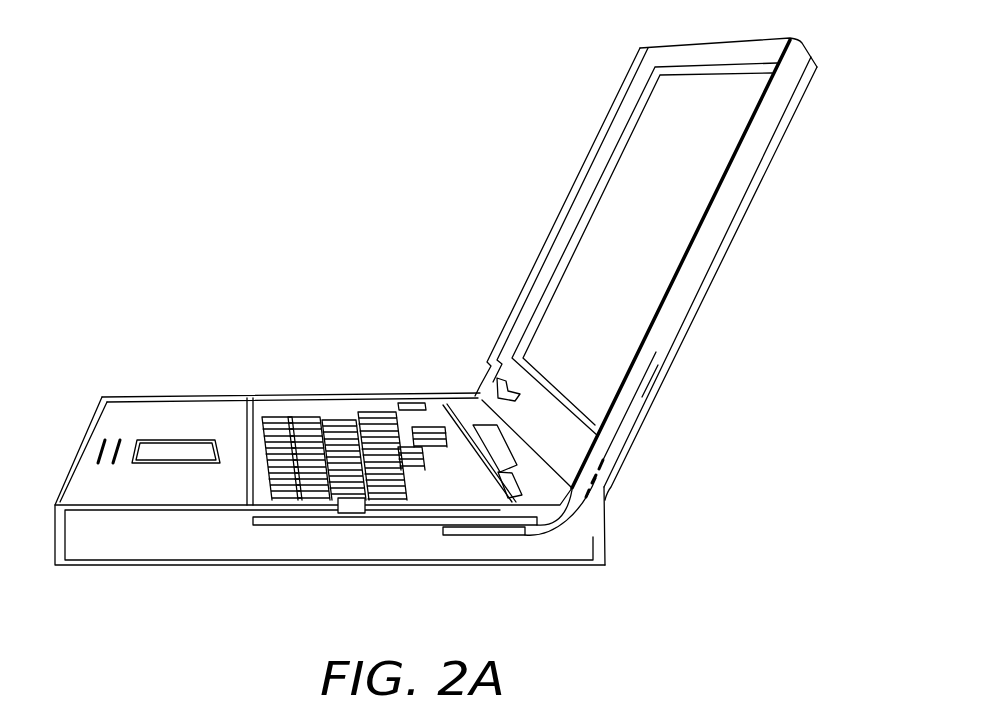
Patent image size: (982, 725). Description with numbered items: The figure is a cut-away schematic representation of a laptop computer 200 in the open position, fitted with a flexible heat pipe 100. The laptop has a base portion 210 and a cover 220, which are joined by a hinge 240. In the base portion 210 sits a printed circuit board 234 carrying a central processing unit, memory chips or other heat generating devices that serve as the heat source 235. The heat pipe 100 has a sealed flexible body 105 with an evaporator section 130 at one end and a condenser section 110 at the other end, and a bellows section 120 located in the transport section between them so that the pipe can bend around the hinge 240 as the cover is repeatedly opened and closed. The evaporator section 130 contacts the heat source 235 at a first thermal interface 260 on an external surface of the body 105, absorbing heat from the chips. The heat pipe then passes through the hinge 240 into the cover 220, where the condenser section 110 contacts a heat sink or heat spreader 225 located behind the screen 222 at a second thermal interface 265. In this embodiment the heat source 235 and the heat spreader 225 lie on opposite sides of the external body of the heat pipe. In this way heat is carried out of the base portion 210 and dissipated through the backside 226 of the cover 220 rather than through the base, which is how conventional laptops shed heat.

The heat pipe 100 is at (550, 539).
The sealed flexible body 105 is at (639, 437).
The condenser section 110 is at (661, 381).
The bellows section 120 is at (586, 510).
The evaporator section 130 is at (488, 537).
The laptop computer 200 is at (241, 152).
The base portion 210 is at (118, 550).
The cover 220 is at (607, 122).
The screen 222 is at (600, 250).
The heat spreader 225 is at (763, 172).
The backside 226 is at (743, 227).
The printed circuit board 234 is at (341, 514).
The heat source 235 is at (433, 528).
The hinge 240 is at (608, 489).
The first thermal interface 260 is at (452, 536).
The second thermal interface 265 is at (650, 402).